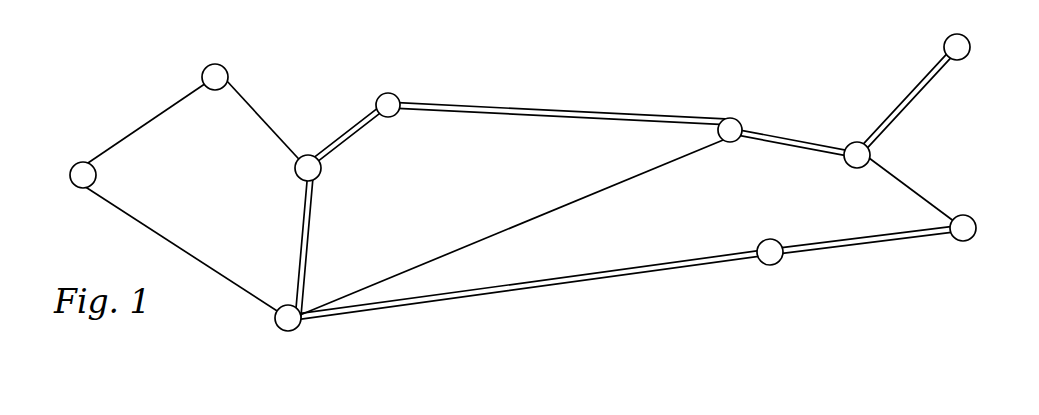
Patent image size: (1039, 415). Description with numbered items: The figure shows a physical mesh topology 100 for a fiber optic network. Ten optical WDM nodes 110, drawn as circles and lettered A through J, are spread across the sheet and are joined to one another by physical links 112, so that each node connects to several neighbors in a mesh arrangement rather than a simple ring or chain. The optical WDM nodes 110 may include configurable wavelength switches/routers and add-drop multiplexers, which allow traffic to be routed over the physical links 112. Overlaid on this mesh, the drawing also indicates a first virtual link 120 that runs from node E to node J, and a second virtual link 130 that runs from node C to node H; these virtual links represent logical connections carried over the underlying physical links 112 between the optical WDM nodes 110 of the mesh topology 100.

The physical mesh topology 100 is at (135, 92).
The optical WDM nodes 110 is at (530, 208).
The physical links 112 is at (523, 183).
The first virtual link 120 is at (527, 104).
The second virtual link 130 is at (584, 268).